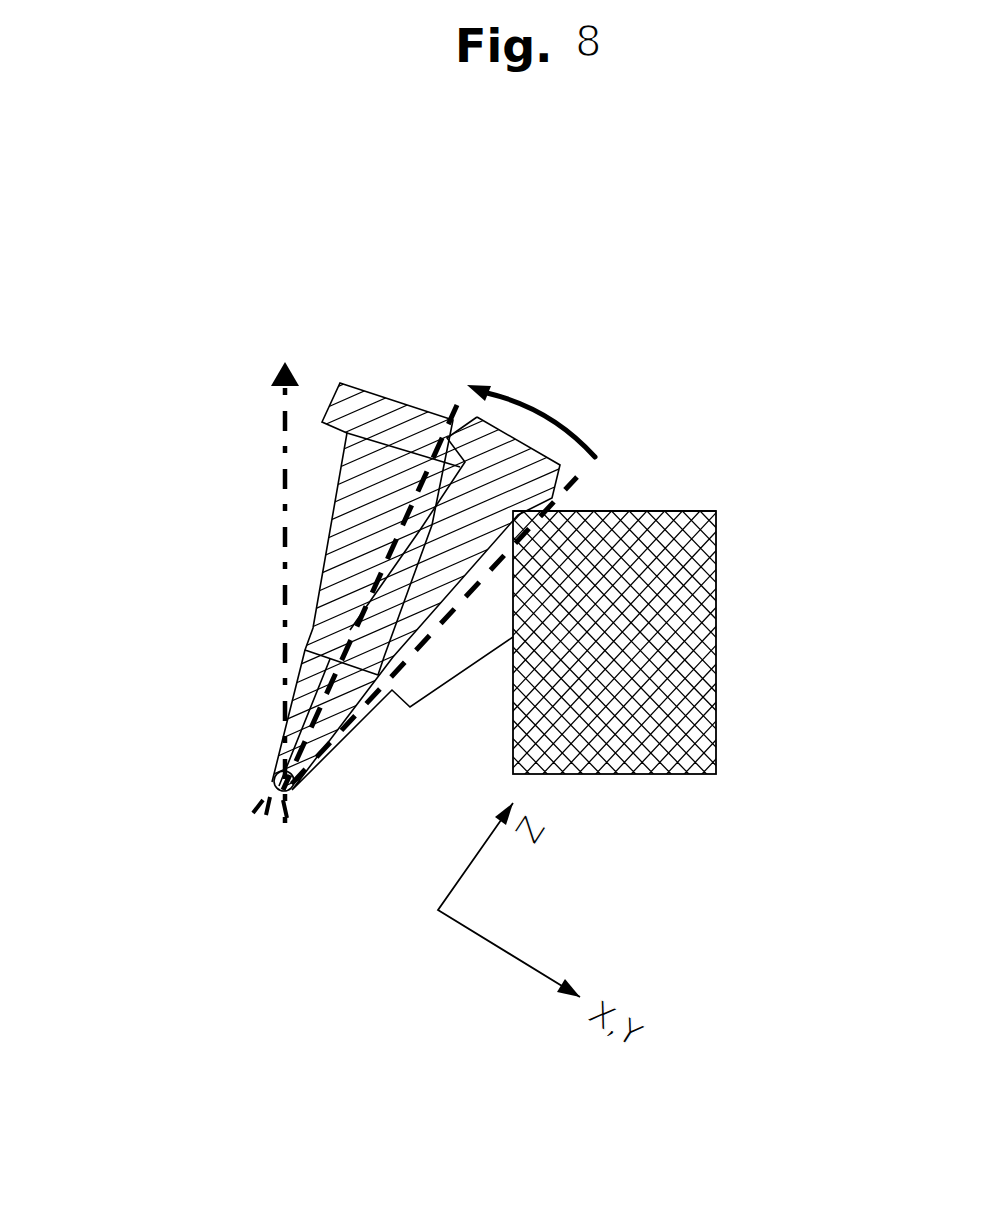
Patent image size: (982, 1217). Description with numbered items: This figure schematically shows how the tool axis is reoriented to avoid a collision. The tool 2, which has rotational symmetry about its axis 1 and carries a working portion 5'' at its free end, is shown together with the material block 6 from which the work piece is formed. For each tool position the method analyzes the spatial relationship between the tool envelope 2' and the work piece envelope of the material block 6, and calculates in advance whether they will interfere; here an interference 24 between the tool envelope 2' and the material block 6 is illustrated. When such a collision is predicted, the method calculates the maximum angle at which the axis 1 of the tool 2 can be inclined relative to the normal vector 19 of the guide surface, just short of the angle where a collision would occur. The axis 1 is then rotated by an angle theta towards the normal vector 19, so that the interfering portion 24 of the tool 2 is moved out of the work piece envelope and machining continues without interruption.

The axis 1 is at (451, 414).
The tool 2 is at (345, 542).
The tool envelope 2' is at (417, 636).
The working portion 5'' is at (183, 826).
The material block 6 is at (715, 697).
The normal vector 19 is at (287, 362).
The interference 24 is at (600, 558).